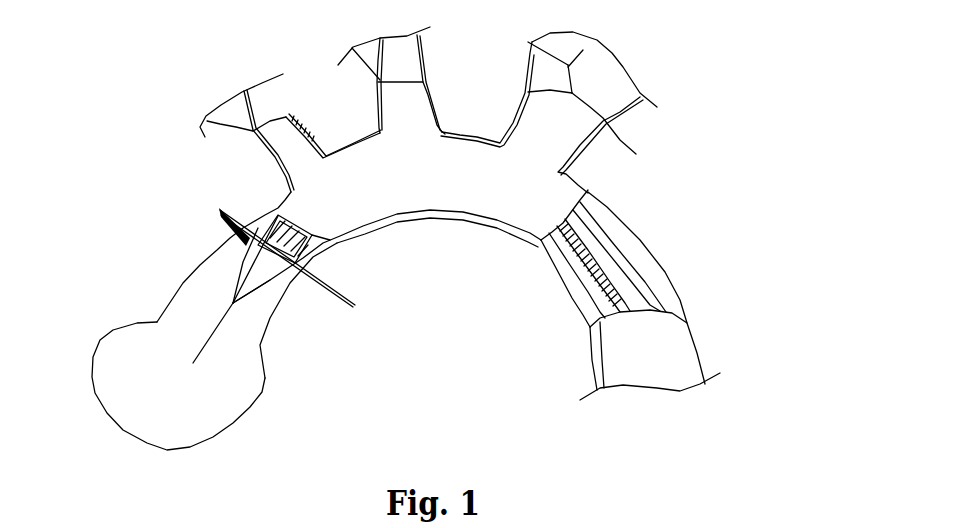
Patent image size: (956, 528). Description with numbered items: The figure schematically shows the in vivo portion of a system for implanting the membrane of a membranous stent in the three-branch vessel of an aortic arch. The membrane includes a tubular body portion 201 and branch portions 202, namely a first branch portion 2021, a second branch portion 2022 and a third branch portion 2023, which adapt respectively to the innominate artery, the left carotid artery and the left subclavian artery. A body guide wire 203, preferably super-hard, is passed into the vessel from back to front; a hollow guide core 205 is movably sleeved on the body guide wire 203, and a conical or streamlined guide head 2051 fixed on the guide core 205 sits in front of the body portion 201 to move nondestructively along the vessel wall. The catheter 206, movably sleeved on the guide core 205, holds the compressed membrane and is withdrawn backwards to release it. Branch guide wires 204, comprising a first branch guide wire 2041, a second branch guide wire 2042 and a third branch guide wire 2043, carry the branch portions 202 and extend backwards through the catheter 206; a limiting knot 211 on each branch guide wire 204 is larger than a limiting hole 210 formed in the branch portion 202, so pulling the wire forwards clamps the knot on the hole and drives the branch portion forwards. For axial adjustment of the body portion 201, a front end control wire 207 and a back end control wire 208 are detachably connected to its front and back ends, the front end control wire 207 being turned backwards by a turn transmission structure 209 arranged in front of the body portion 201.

The body portion 201 is at (432, 182).
The branch portions 202 is at (547, 133).
The first branch portion 2021 is at (308, 128).
The second branch portion 2022 is at (402, 115).
The third branch portion 2023 is at (572, 125).
The body guide wire 203 is at (211, 340).
The branch guide wires 204 is at (632, 268).
The first branch guide wire 2041 is at (252, 112).
The second branch guide wire 2042 is at (390, 67).
The third branch guide wire 2043 is at (580, 47).
The guide core 205 is at (278, 214).
The guide head 2051 is at (250, 270).
The catheter 206 is at (668, 353).
The front end control wire 207 is at (300, 262).
The back end control wire 208 is at (578, 293).
The turn transmission structure 209 is at (263, 244).
The limiting hole 210 is at (527, 43).
The limiting knot 211 is at (572, 80).